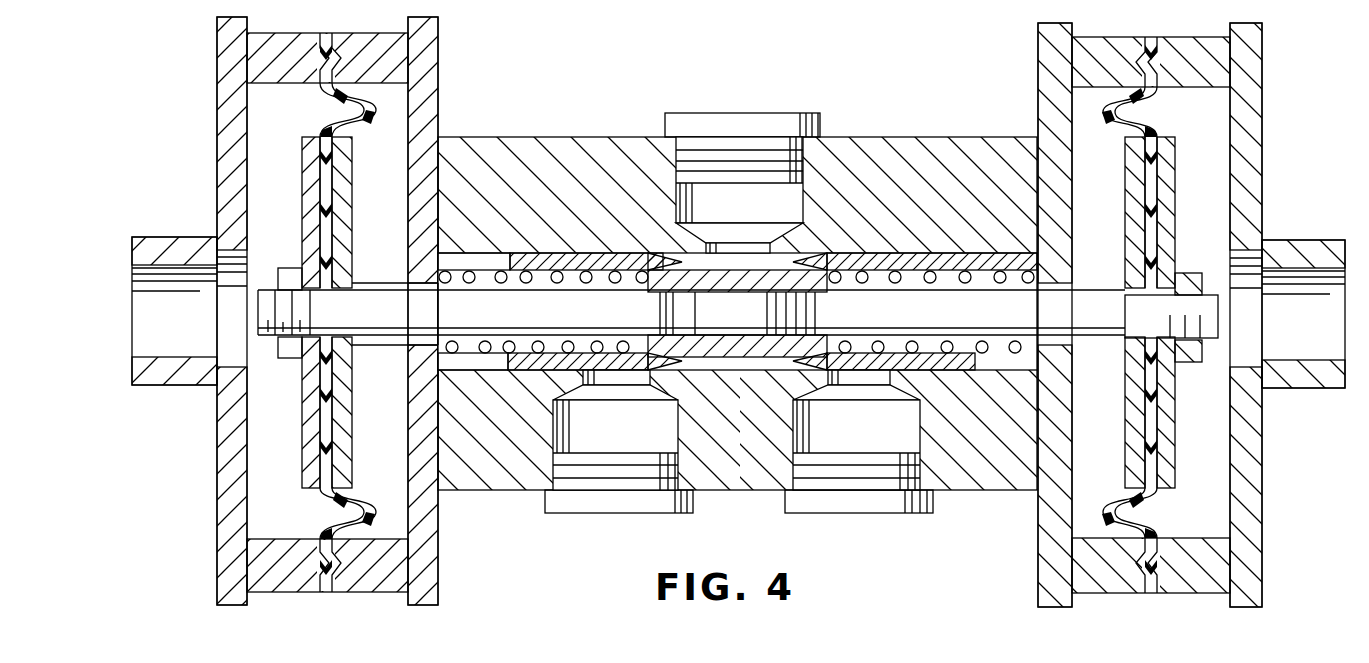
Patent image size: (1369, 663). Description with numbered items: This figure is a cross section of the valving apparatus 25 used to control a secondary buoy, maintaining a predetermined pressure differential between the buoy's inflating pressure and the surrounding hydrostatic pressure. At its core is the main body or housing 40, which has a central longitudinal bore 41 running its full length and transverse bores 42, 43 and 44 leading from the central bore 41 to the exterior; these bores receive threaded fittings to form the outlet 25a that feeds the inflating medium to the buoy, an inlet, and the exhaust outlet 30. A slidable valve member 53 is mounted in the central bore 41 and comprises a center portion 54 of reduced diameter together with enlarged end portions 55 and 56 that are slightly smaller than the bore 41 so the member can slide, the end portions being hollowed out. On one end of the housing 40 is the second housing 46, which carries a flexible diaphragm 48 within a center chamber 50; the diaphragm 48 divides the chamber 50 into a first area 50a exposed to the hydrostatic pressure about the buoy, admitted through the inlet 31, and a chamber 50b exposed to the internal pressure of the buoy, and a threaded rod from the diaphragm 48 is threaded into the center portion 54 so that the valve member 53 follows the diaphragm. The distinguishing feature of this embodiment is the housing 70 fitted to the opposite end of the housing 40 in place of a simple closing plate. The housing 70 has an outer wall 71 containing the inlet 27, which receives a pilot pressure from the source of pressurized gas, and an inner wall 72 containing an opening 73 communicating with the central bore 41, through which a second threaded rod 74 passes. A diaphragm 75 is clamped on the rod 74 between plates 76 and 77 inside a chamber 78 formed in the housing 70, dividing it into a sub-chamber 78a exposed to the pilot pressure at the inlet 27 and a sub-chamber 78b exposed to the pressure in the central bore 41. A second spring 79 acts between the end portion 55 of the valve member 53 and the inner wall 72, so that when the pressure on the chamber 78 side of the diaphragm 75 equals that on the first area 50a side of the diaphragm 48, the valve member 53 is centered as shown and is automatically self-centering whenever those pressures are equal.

The housing 70 is at (186, 190).
The outer wall 71 is at (222, 62).
The inner wall 72 is at (425, 80).
The opening 73 is at (412, 345).
The second threaded rod 74 is at (506, 320).
The diaphragm 75 is at (330, 218).
The plate 76 is at (310, 170).
The plate 77 is at (352, 155).
The chamber 78 is at (262, 510).
The sub-chamber 78a is at (292, 480).
The sub-chamber 78b is at (405, 230).
The second spring 79 is at (585, 262).
The inlet 27 is at (143, 250).
The valving apparatus 25 is at (920, 136).
The outlet 25a is at (790, 118).
The main body or housing 40 is at (562, 150).
The central longitudinal bore 41 is at (483, 362).
The transverse bore 42 is at (742, 212).
The transverse bore 43 is at (623, 445).
The transverse bore 44 is at (870, 445).
The slidable valve member 53 is at (675, 352).
The center portion 54 is at (752, 355).
The enlarged end portion 55 is at (532, 362).
The enlarged end portion 56 is at (950, 362).
The exhaust outlet 30 is at (897, 505).
The second housing 46 is at (1278, 200).
The flexible diaphragm 48 is at (1148, 190).
The center chamber 50 is at (1198, 487).
The first area 50a is at (1217, 445).
The chamber 50b is at (1119, 445).
The inlet 31 is at (1312, 248).